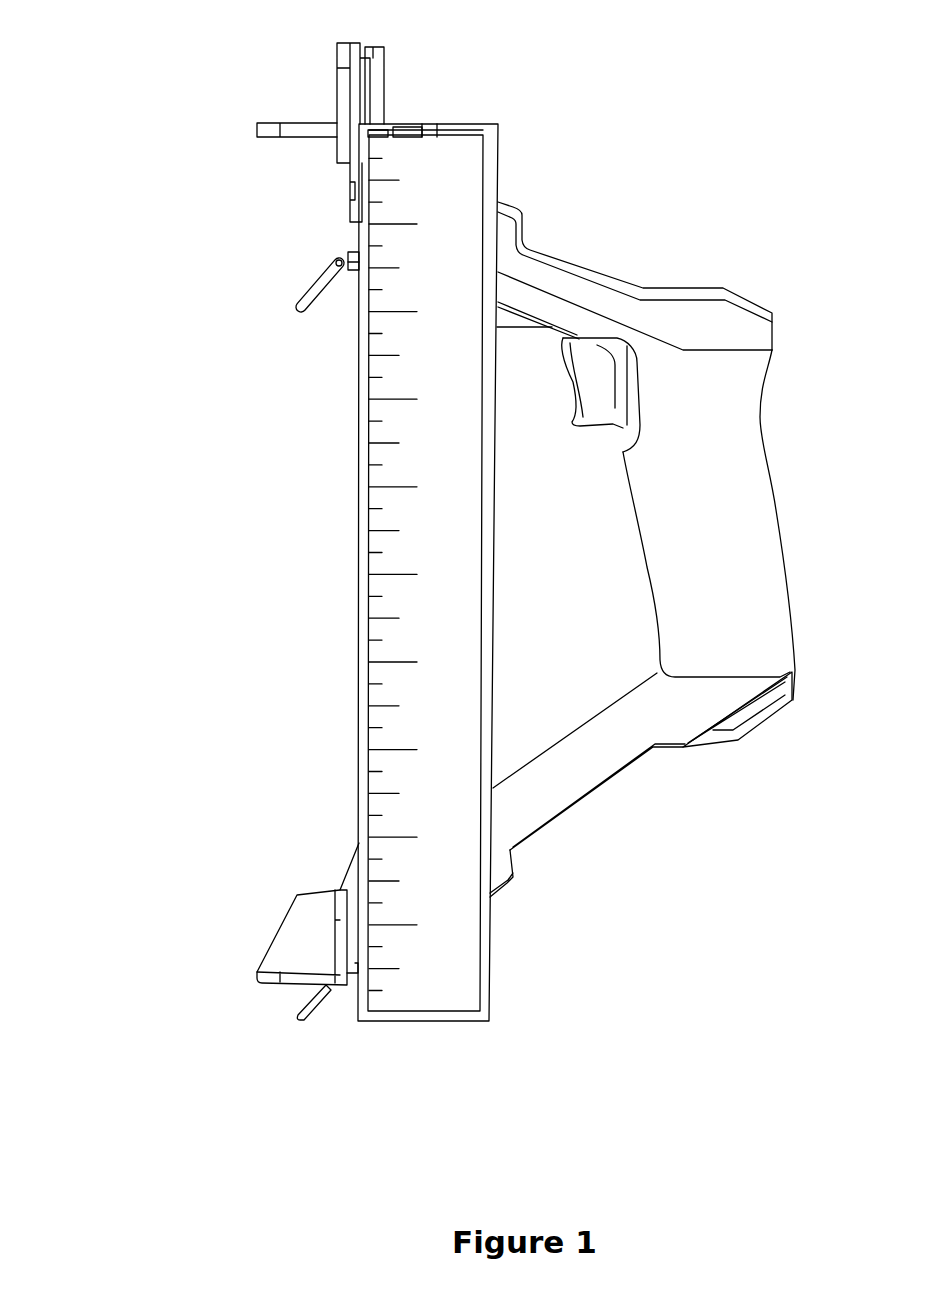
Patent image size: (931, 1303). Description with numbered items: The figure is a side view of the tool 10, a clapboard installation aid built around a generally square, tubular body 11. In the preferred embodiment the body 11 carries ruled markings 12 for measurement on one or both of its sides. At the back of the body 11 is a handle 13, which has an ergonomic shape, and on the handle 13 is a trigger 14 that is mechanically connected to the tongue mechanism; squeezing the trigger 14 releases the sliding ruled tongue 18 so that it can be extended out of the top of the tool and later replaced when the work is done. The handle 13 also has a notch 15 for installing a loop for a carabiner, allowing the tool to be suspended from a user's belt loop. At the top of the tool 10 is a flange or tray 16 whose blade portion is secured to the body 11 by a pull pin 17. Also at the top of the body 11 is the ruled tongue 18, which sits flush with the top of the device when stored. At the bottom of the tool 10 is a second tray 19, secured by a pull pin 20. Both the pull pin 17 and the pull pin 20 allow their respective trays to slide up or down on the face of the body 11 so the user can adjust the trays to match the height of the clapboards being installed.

The tool 10 is at (192, 494).
The tubular body 11 is at (347, 684).
The ruled markings 12 is at (380, 358).
The handle 13 is at (608, 743).
The trigger 14 is at (600, 393).
The notch 15 is at (743, 715).
The tray 16 is at (312, 118).
The pull pin 17 is at (290, 283).
The ruled tongue 18 is at (403, 112).
The second tray 19 is at (293, 915).
The pull pin 20 is at (298, 1007).